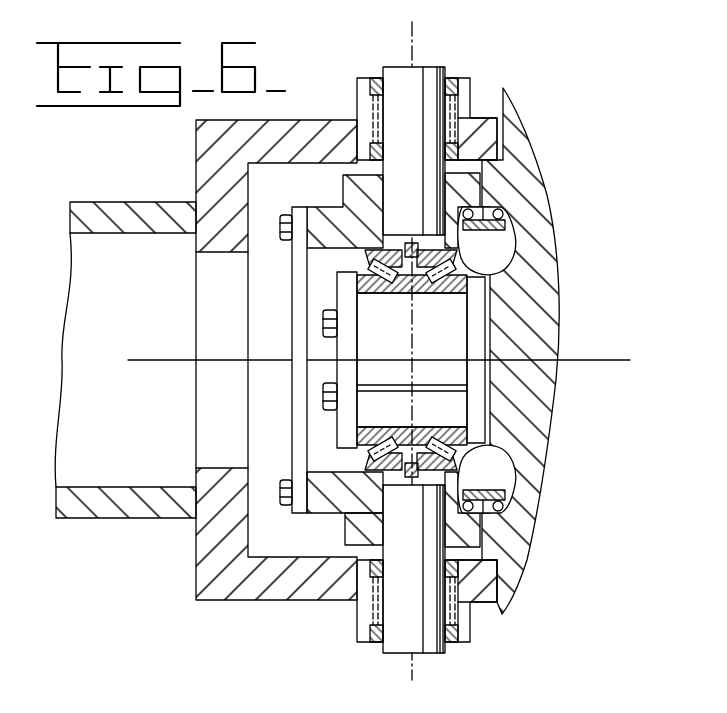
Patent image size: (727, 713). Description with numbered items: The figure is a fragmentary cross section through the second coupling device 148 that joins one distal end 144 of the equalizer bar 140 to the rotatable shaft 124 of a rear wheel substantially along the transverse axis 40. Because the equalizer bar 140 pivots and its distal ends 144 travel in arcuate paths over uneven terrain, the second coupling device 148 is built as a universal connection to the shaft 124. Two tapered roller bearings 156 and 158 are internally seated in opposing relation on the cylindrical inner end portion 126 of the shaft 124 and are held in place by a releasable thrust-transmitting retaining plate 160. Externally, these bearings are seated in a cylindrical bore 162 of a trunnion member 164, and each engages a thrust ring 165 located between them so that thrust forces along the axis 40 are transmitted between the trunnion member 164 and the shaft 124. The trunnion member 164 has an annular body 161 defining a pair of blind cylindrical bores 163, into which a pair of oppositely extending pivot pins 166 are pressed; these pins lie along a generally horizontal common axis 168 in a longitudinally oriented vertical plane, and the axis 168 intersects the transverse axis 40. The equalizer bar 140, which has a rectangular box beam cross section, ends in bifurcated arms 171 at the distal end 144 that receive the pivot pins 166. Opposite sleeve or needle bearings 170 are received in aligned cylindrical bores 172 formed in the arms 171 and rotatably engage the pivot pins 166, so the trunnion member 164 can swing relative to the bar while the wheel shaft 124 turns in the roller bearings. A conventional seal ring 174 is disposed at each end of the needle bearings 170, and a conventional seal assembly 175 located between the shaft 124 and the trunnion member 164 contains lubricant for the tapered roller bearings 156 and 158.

The second transverse axis 40 is at (223, 360).
The shaft 124 is at (552, 343).
The cylindrical inner end portion 126 is at (427, 349).
The equalizer bar 140 is at (115, 520).
The distal ends 144 is at (212, 572).
The second coupling device 148 is at (305, 606).
The tapered roller bearing 156 is at (387, 294).
The tapered roller bearing 158 is at (442, 294).
The retaining plate 160 is at (343, 414).
The annular body 161 is at (470, 190).
The cylindrical bore 162 is at (458, 468).
The blind cylindrical bores 163 is at (397, 200).
The trunnion member 164 is at (334, 524).
The thrust ring 165 is at (393, 470).
The pivot pins 166 is at (400, 72).
The common axis 168 is at (425, 48).
The needle bearings 170 is at (452, 102).
The bifurcated arms 171 is at (460, 80).
The cylindrical bores 172 is at (385, 106).
The seal ring 174 is at (455, 153).
The seal assembly 175 is at (502, 243).